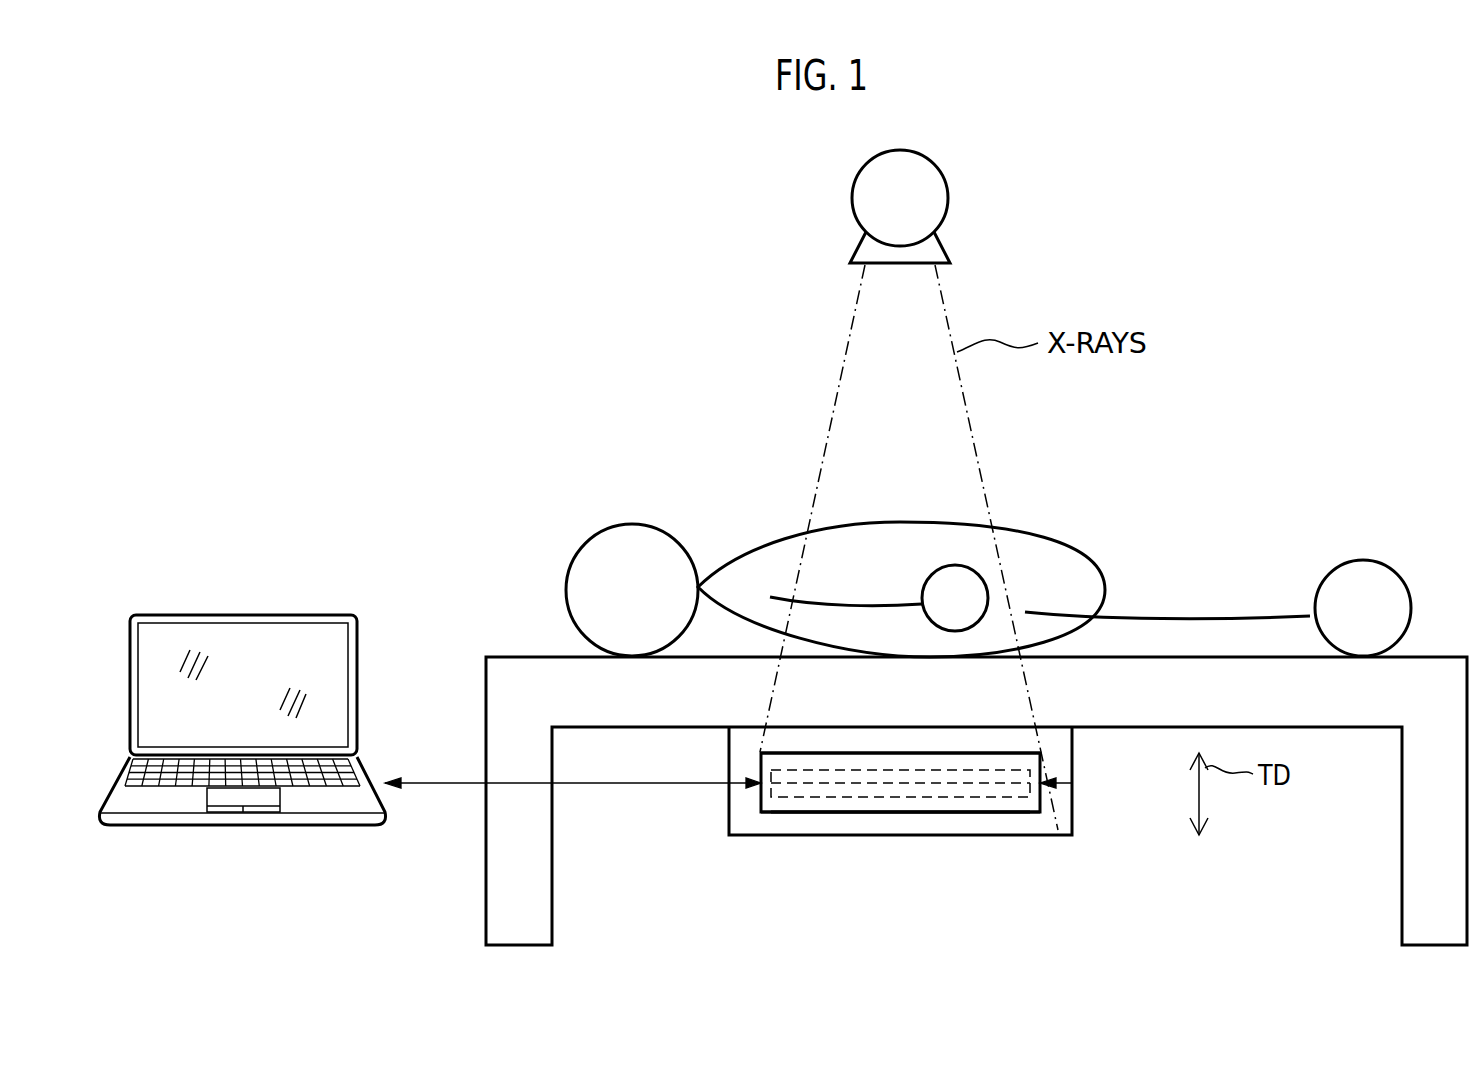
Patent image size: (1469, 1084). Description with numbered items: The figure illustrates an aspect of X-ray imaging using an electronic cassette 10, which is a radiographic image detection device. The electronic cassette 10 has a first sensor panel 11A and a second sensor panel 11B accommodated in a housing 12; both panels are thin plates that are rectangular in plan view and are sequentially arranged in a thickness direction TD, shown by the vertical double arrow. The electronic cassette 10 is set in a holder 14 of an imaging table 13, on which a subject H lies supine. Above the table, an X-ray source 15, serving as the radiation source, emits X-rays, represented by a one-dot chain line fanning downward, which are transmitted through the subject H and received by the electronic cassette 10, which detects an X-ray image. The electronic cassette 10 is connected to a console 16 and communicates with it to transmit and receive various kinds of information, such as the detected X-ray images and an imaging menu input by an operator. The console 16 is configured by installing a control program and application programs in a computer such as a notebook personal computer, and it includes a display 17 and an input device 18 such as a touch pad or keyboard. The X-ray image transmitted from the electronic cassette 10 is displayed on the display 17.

The electronic cassette 10 is at (1073, 786).
The first sensor panel 11A is at (1044, 771).
The second sensor panel 11B is at (1050, 836).
The housing 12 is at (900, 814).
The imaging table 13 is at (514, 668).
The holder 14 is at (728, 816).
The X-ray source 15 is at (948, 186).
The console 16 is at (253, 669).
The display 17 is at (297, 622).
The input device 18 is at (353, 767).
The subject H is at (600, 529).